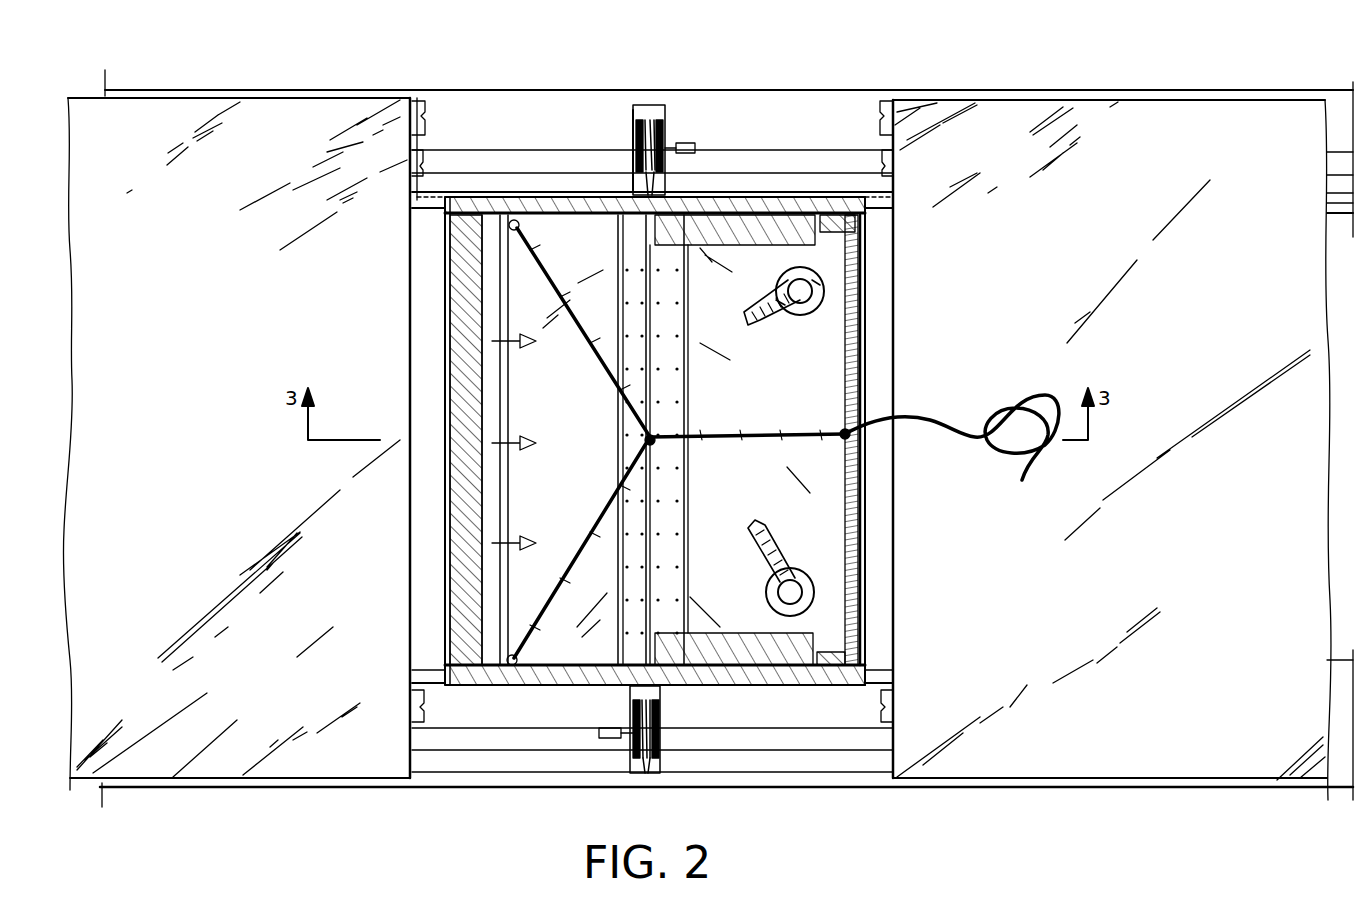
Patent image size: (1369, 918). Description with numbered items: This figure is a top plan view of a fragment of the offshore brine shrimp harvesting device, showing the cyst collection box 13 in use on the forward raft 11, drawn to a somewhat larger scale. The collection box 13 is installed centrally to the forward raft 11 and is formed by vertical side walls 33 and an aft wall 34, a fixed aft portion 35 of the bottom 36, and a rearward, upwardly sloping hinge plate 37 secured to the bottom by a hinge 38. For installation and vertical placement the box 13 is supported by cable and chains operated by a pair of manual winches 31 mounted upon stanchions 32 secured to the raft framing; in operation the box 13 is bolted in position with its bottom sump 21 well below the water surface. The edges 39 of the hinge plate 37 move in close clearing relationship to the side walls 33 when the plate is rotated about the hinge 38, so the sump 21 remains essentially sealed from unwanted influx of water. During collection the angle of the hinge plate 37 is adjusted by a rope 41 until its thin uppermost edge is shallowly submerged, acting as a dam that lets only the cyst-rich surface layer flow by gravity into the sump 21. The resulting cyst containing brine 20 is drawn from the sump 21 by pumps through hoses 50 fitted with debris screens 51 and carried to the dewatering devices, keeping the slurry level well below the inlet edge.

The forward raft 11 is at (340, 785).
The cyst collection box 13 is at (500, 690).
The cyst containing brine 20 is at (750, 645).
The bottom sump 21 is at (771, 220).
The manual winch 31 is at (670, 108).
The stanchion 32 is at (633, 126).
The vertical side wall 33 is at (790, 235).
The aft wall 34 is at (835, 530).
The fixed aft portion of bottom 35 is at (722, 640).
The bottom 36 is at (707, 250).
The hinge plate 37 is at (612, 655).
The hinge 38 is at (668, 660).
The edge of plate 39 is at (500, 230).
The rope 41 is at (745, 437).
The hose 50 is at (836, 282).
The debris screen 51 is at (826, 308).